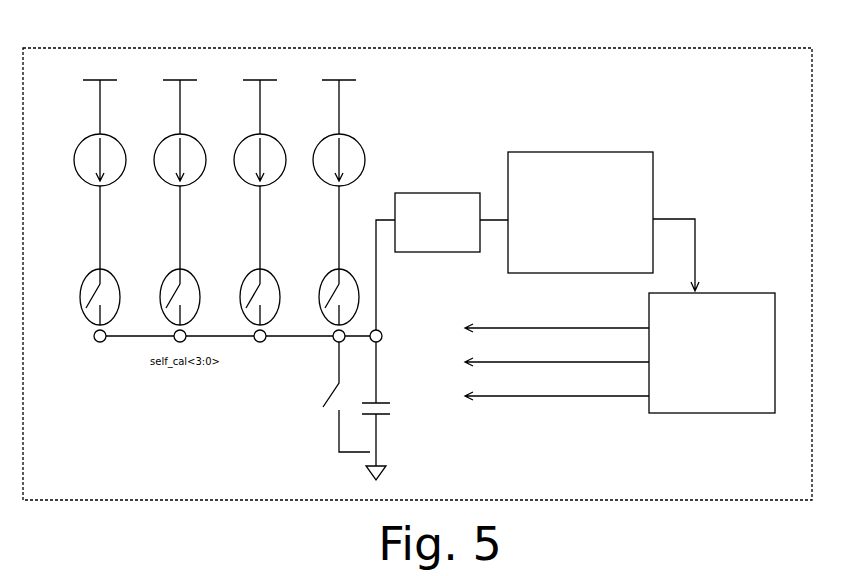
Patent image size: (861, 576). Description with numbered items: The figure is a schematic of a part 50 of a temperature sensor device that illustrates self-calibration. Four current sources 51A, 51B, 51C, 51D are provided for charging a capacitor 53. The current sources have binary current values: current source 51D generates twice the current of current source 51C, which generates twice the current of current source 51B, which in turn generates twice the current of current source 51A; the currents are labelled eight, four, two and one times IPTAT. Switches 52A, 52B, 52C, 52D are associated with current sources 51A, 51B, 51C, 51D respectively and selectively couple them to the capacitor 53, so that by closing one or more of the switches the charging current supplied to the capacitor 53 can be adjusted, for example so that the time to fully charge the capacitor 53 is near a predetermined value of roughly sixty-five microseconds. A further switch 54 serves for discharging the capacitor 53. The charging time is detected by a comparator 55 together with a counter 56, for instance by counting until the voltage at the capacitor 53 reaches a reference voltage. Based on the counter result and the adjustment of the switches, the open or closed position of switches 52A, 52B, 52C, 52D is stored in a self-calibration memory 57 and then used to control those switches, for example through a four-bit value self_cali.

The part of temperature sensor device 50 is at (685, 47).
The current source 51A is at (347, 128).
The current source 51B is at (268, 125).
The current source 51C is at (187, 128).
The current source 51D is at (107, 128).
The switch 52A is at (321, 282).
The switch 52B is at (242, 282).
The switch 52C is at (162, 282).
The switch 52D is at (82, 282).
The capacitor 53 is at (386, 418).
The further switch 54 is at (326, 405).
The comparator 55 is at (432, 193).
The counter 56 is at (590, 152).
The self-calibration memory 57 is at (716, 292).